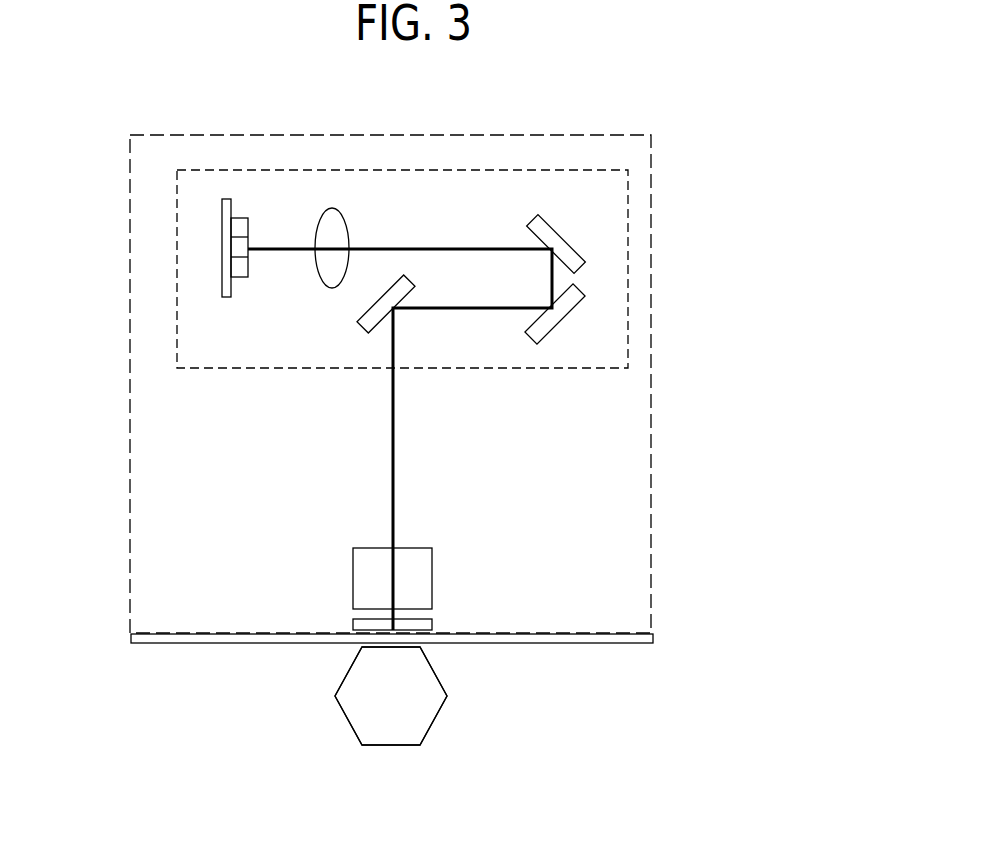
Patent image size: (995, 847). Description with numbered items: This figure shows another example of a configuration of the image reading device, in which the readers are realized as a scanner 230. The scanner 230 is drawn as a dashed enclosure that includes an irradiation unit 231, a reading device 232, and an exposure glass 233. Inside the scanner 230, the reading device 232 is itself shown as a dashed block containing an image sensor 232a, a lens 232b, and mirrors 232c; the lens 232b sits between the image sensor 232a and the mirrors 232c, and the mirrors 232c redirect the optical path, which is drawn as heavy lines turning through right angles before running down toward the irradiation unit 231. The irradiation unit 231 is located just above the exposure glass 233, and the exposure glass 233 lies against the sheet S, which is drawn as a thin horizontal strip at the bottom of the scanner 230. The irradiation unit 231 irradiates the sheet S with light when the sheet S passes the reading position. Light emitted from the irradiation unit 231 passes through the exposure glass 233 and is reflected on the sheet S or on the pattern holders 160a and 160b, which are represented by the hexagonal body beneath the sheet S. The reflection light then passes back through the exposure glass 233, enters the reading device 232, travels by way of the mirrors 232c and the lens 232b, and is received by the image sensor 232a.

The scanner 230 is at (653, 215).
The reading device 232 is at (527, 370).
The image sensor 232a is at (226, 297).
The lens 232b is at (333, 208).
The mirrors 232c is at (547, 215).
The irradiation unit 231 is at (432, 570).
The exposure glass 233 is at (432, 628).
The sheet S is at (130, 637).
The pattern holder 160a is at (442, 723).
The pattern holder 160b is at (391, 696).